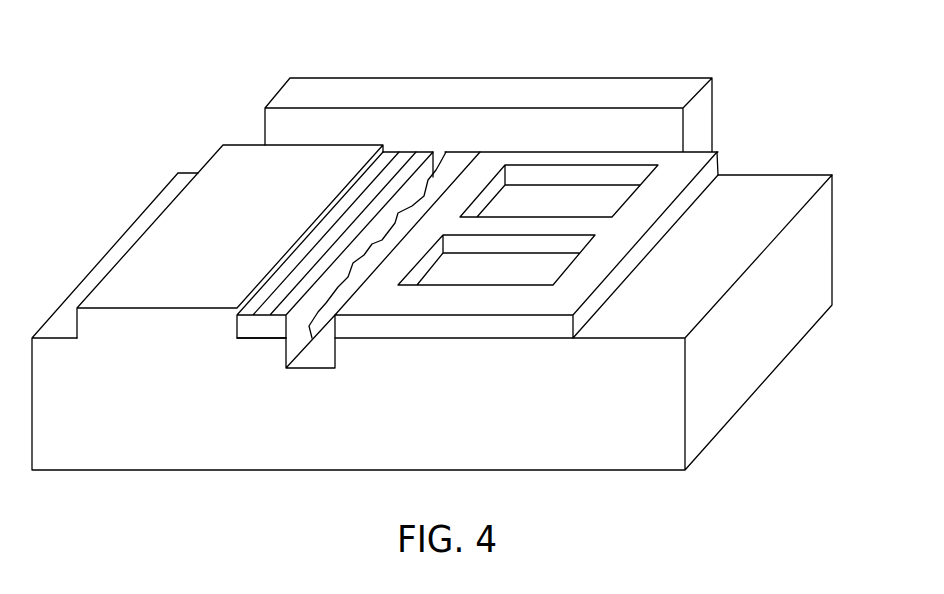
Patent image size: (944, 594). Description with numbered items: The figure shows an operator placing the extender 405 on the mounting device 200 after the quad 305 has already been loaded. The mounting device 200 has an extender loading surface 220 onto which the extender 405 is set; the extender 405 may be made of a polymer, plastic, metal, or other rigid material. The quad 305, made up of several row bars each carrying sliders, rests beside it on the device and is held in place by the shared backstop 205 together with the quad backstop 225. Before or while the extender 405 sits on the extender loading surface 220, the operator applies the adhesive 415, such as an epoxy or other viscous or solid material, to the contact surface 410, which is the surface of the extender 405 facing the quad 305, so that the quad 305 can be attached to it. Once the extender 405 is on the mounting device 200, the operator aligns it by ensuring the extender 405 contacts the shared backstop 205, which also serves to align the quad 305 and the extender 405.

The mounting device 200 is at (648, 448).
The shared backstop 205 is at (546, 92).
The extender loading surface 220 is at (697, 303).
The quad backstop 225 is at (133, 280).
The quad 305 is at (262, 323).
The extender 405 is at (683, 170).
The contact surface 410 is at (457, 159).
The adhesive 415 is at (323, 328).